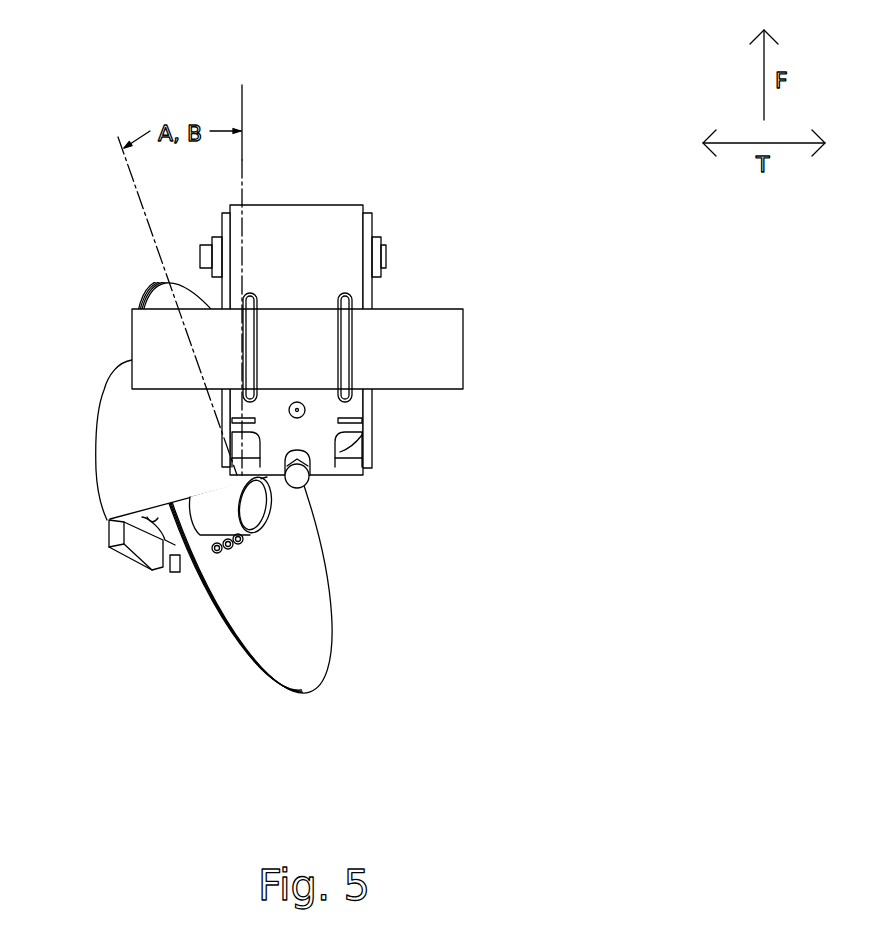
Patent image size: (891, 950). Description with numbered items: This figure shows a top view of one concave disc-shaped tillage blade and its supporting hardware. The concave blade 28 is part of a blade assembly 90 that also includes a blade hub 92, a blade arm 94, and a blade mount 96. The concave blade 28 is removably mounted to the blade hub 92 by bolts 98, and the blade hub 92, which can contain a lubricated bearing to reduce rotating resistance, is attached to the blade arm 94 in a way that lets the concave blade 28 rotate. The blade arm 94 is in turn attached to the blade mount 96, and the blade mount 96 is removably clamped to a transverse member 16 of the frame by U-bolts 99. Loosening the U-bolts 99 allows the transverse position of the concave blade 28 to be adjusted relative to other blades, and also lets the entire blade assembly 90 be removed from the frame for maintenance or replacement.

The transverse member 16 is at (438, 308).
The concave blade 28 is at (312, 700).
The blade assembly 90 is at (177, 687).
The blade hub 92 is at (257, 530).
The blade arm 94 is at (142, 553).
The blade mount 96 is at (374, 447).
The bolts 98 is at (180, 573).
The U-bolts 99 is at (353, 343).